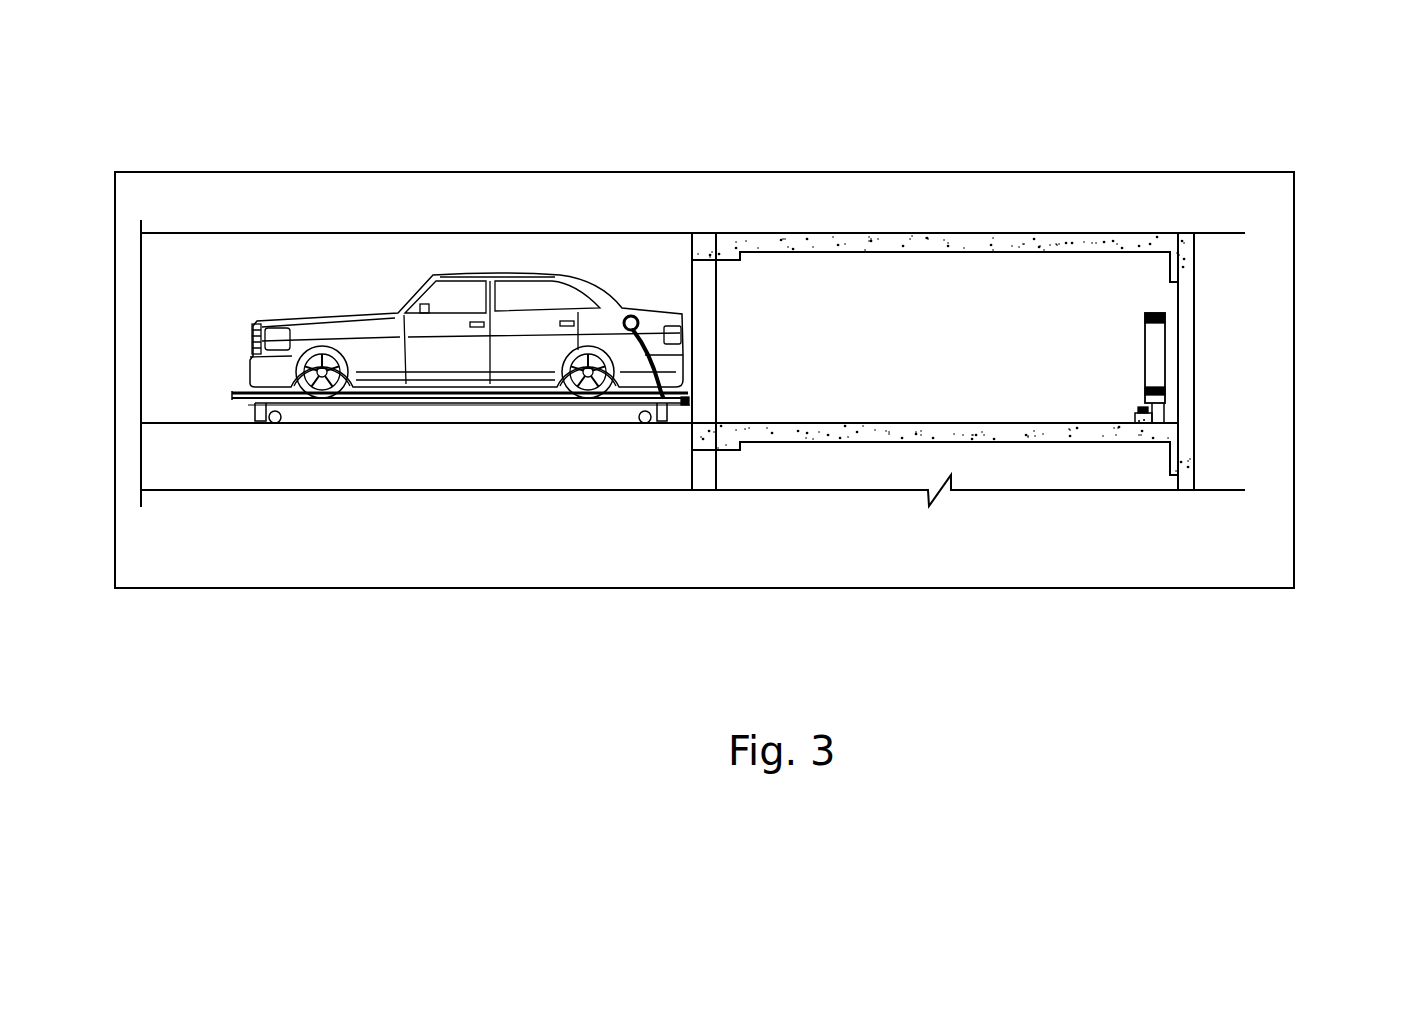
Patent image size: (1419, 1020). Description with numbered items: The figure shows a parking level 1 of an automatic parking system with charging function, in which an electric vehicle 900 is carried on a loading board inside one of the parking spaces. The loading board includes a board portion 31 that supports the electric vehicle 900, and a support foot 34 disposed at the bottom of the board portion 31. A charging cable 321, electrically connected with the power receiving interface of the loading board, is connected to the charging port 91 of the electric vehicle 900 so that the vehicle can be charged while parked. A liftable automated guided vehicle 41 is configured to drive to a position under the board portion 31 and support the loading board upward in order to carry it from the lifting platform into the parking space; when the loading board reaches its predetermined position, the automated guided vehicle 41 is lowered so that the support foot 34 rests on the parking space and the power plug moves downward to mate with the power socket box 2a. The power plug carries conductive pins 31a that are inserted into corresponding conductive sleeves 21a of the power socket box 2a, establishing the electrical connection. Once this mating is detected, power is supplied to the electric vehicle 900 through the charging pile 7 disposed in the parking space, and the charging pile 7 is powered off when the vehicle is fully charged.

The parking level 1 is at (258, 223).
The electric vehicle 900 is at (388, 318).
The charging port 91 is at (624, 308).
The charging pile 7 is at (1154, 333).
The conductive sleeve 21a is at (1152, 412).
The power socket box 2a is at (1138, 413).
The support foot 34 is at (256, 423).
The board portion 31 is at (382, 400).
The automated guided vehicle 41 is at (525, 410).
The charging cable 321 is at (652, 398).
The conductive pin 31a is at (682, 406).